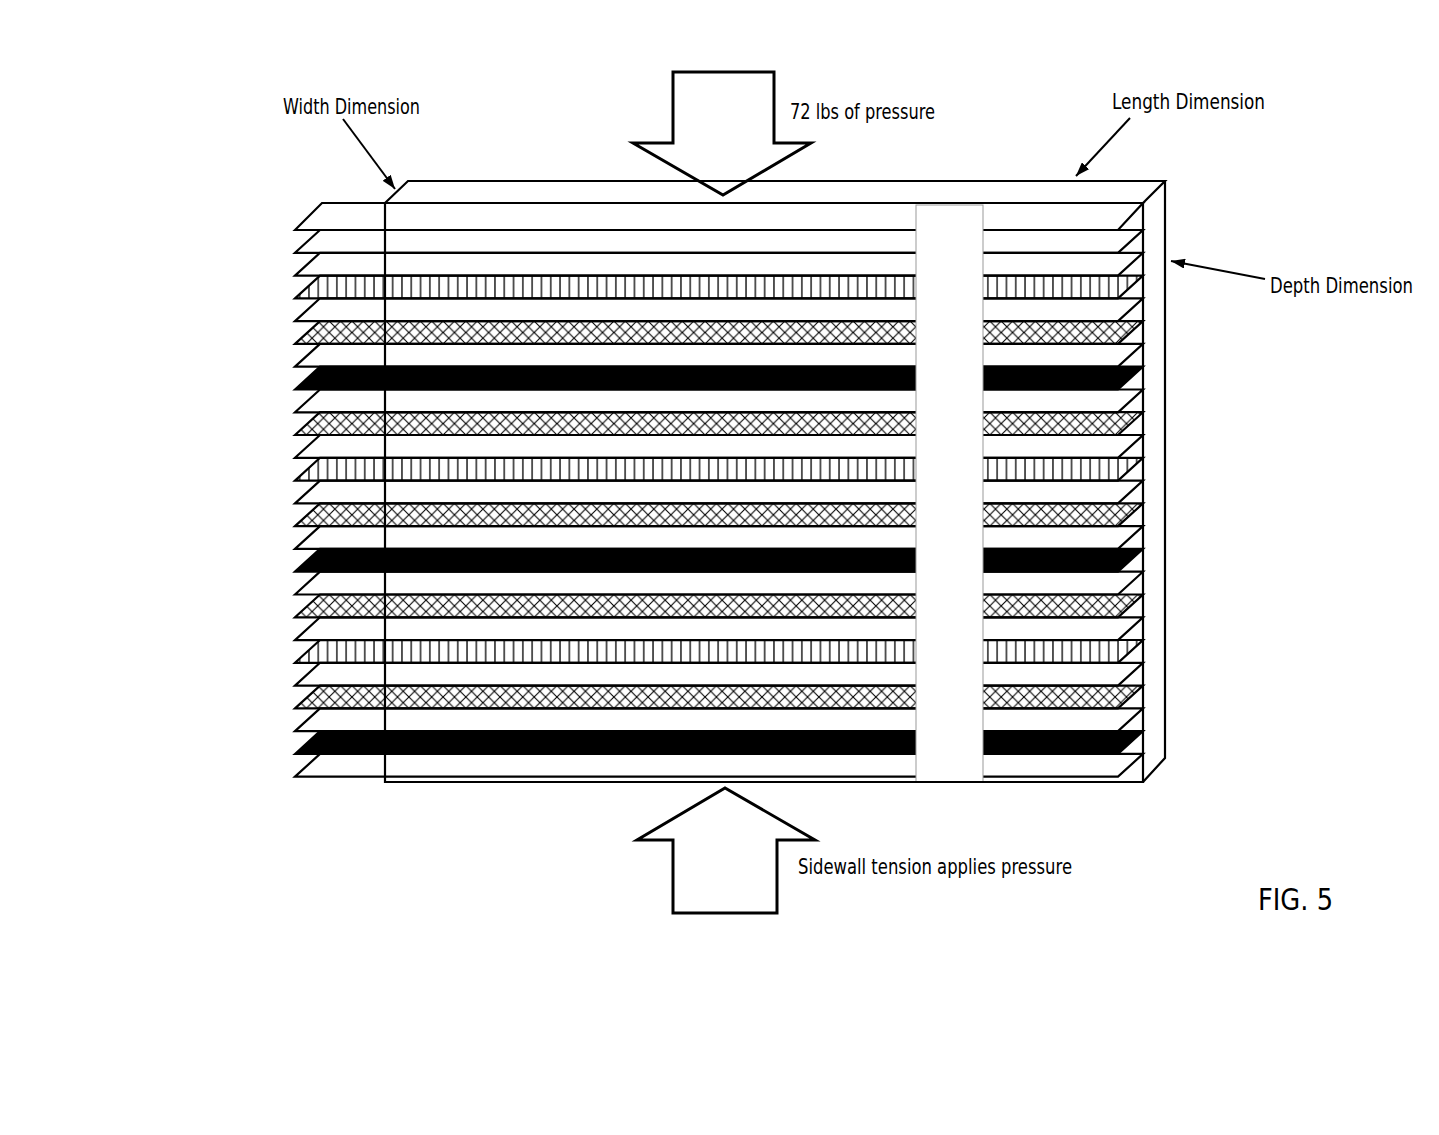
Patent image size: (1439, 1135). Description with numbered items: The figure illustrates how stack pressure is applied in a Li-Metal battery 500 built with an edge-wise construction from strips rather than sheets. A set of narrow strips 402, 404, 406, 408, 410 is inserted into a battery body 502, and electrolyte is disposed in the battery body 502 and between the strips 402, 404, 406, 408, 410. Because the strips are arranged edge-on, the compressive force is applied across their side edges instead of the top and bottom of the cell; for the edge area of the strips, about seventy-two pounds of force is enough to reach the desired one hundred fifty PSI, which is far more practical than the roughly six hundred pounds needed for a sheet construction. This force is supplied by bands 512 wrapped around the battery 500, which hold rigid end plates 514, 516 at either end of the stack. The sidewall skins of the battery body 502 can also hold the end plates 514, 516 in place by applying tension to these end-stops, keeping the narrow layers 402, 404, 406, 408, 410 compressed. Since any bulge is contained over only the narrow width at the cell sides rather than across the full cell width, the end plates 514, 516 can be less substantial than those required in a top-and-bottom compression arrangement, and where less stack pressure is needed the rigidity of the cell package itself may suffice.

The battery 500 is at (1378, 135).
The battery body 502 is at (1075, 785).
The bands 512 is at (673, 120).
The end plate 514 is at (330, 768).
The end plate 516 is at (322, 213).
The strip 402 is at (1145, 458).
The strip 404 is at (300, 498).
The strip 406 is at (1145, 420).
The strip 408 is at (298, 410).
The strip 410 is at (1145, 562).